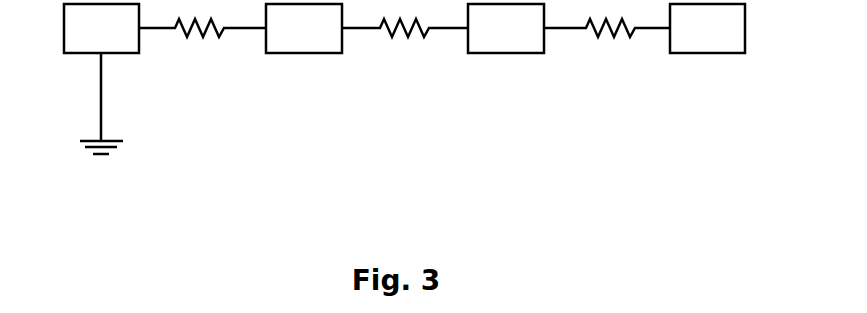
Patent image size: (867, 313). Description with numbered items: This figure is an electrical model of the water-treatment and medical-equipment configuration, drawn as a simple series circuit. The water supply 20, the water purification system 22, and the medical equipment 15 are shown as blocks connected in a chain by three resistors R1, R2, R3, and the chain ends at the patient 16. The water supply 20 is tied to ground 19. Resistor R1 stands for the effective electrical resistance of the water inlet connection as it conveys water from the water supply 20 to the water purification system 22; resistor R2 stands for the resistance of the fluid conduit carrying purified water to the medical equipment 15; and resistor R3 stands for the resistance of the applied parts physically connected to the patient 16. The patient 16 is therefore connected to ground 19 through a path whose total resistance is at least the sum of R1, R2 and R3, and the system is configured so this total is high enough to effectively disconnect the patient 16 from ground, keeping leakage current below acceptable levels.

The water supply 20 is at (101, 28).
The water purification system 22 is at (304, 28).
The medical equipment 15 is at (506, 28).
The patient 16 is at (707, 28).
The ground 19 is at (100, 105).
The resistor R1 is at (202, 44).
The resistor R2 is at (405, 44).
The resistor R3 is at (607, 44).